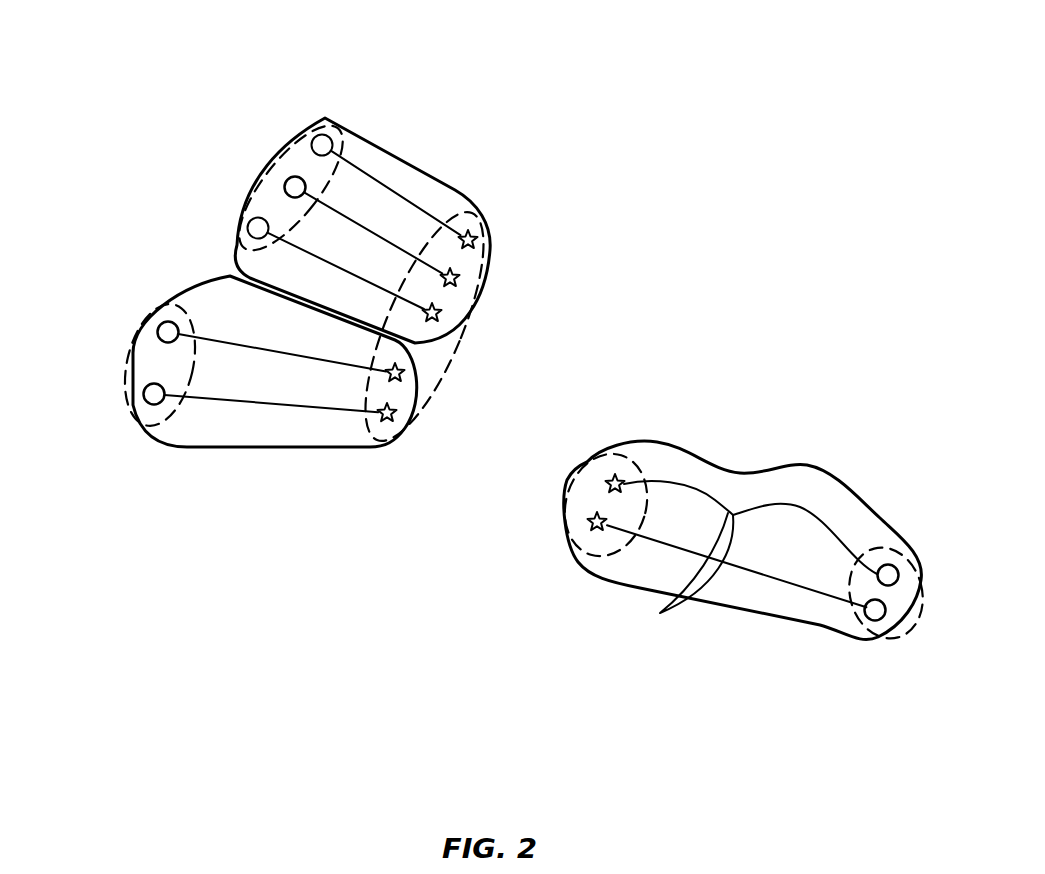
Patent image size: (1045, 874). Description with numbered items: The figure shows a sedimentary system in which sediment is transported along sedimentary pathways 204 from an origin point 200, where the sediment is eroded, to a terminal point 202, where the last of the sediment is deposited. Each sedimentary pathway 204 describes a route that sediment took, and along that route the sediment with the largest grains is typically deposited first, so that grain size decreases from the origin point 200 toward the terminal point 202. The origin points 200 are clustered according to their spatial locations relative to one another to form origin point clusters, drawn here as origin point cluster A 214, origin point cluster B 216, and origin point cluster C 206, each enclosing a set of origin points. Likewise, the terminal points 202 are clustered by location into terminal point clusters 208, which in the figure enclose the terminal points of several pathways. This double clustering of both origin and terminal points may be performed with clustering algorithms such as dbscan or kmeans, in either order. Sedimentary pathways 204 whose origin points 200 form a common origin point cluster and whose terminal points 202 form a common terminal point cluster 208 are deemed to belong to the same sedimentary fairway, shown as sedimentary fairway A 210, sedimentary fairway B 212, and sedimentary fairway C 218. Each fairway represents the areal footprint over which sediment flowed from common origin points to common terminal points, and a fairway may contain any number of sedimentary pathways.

The origin point 200 is at (284, 190).
The terminal point 202 is at (468, 281).
The sedimentary pathway 204 is at (660, 613).
The origin point cluster C 206 is at (870, 643).
The terminal point cluster 208 is at (452, 363).
The sedimentary fairway A 210 is at (408, 160).
The sedimentary fairway B 212 is at (260, 452).
The origin point cluster A 214 is at (286, 145).
The origin point cluster B 216 is at (128, 363).
The sedimentary fairway C 218 is at (823, 467).